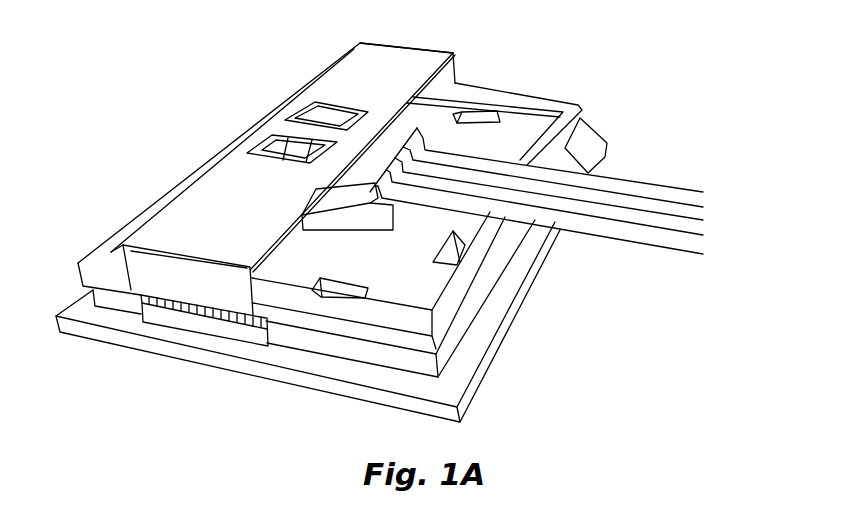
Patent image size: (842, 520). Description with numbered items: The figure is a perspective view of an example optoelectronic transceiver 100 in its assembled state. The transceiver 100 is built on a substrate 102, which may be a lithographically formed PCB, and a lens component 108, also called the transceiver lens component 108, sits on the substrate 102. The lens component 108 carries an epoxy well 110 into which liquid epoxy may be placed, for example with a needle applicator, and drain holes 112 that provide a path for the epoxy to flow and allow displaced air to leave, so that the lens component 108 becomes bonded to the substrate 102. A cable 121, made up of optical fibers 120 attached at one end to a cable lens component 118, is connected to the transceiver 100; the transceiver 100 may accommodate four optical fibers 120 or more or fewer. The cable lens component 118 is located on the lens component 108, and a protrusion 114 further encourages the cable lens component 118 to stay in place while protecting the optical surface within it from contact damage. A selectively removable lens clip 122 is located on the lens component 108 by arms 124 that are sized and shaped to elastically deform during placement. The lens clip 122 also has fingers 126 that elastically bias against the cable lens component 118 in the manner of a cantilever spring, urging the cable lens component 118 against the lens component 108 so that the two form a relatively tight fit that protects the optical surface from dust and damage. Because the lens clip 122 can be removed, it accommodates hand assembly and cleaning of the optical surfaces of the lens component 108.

The optoelectronic transceiver 100 is at (138, 82).
The substrate 102 is at (287, 377).
The lens component 108 is at (163, 200).
The epoxy well 110 is at (410, 290).
The drain holes 112 is at (479, 120).
The protrusion 114 is at (387, 210).
The cable lens component 118 is at (388, 143).
The optical fibers 120 is at (647, 204).
The cable 121 is at (613, 154).
The lens clip 122 is at (362, 62).
The arms 124 is at (207, 323).
The fingers 126 is at (312, 120).